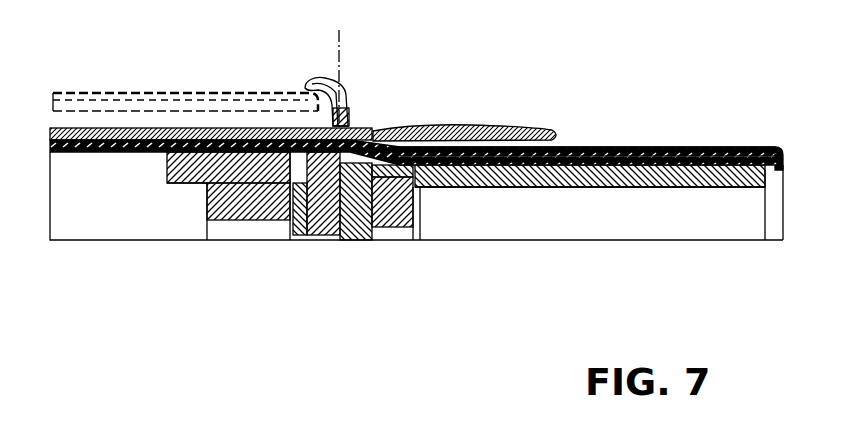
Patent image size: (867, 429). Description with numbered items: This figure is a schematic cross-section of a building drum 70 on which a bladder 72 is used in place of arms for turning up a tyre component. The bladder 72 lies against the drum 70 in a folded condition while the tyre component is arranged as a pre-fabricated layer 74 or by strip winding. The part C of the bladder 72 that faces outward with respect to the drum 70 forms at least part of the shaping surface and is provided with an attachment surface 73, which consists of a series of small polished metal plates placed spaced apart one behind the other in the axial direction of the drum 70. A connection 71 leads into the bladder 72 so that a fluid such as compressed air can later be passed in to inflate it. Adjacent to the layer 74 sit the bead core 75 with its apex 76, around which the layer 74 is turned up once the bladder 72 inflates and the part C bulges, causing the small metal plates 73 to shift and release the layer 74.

The drum 70 is at (772, 247).
The connection 71 is at (483, 188).
The bladder 72 is at (632, 188).
The attachment surface 73 is at (573, 145).
The pre-fabricated layer 74 is at (465, 128).
The bead core 75 is at (355, 110).
The apex 76 is at (342, 87).
The part of the bladder C is at (695, 148).